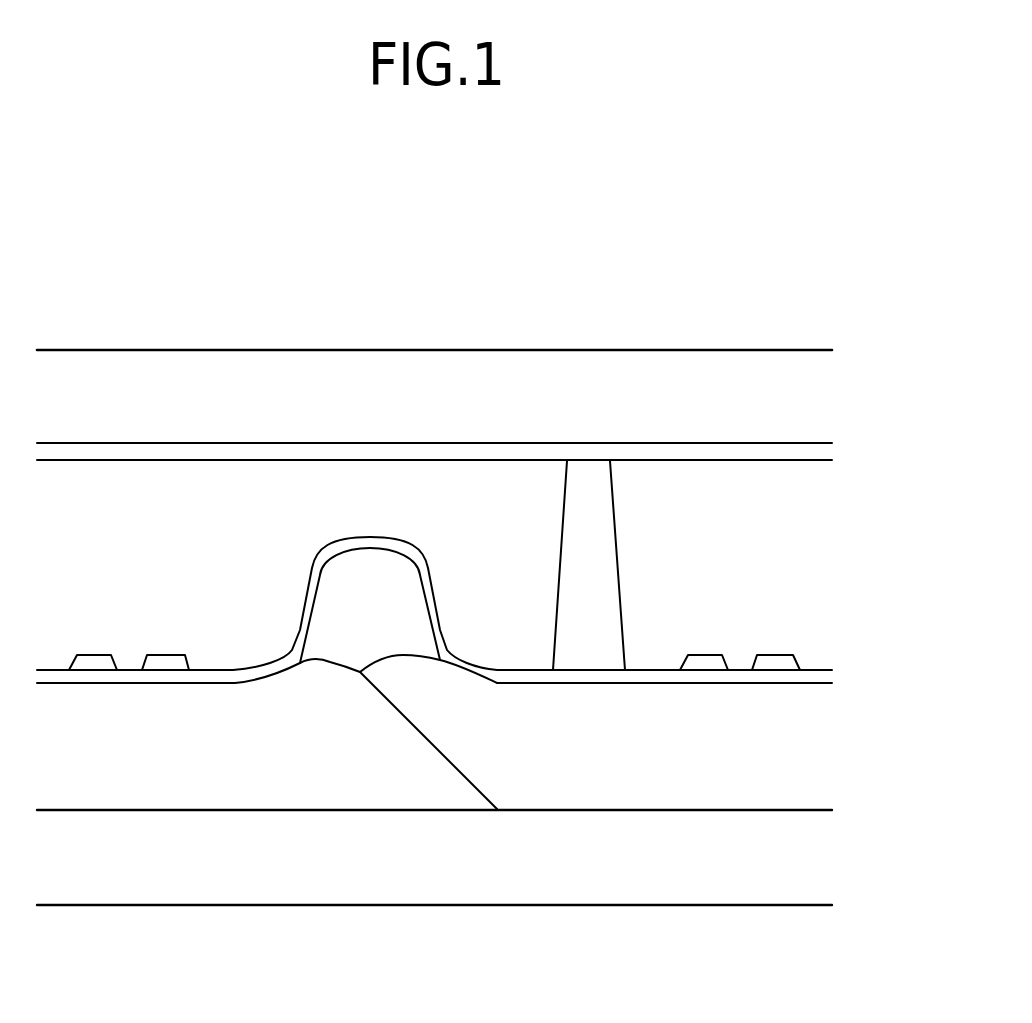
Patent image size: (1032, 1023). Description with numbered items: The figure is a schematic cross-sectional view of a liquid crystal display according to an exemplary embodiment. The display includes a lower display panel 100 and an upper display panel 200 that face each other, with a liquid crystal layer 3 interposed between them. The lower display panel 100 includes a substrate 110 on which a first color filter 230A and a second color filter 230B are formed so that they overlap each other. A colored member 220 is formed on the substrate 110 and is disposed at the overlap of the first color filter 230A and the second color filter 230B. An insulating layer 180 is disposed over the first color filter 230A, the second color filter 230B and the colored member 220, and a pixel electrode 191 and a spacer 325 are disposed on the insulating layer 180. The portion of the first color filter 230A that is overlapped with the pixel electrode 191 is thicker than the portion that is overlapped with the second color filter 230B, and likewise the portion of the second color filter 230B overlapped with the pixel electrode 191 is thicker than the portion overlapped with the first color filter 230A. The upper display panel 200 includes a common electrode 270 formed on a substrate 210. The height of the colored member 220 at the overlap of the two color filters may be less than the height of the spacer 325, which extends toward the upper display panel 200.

The liquid crystal layer 3 is at (463, 565).
The lower display panel 100 is at (477, 818).
The substrate 110 is at (578, 882).
The insulating layer 180 is at (428, 588).
The pixel electrode 191 is at (92, 665).
The upper display panel 200 is at (477, 370).
The substrate 210 is at (381, 370).
The colored member 220 is at (370, 570).
The first color filter 230A is at (125, 757).
The second color filter 230B is at (677, 757).
The common electrode 270 is at (517, 452).
The spacer 325 is at (593, 535).